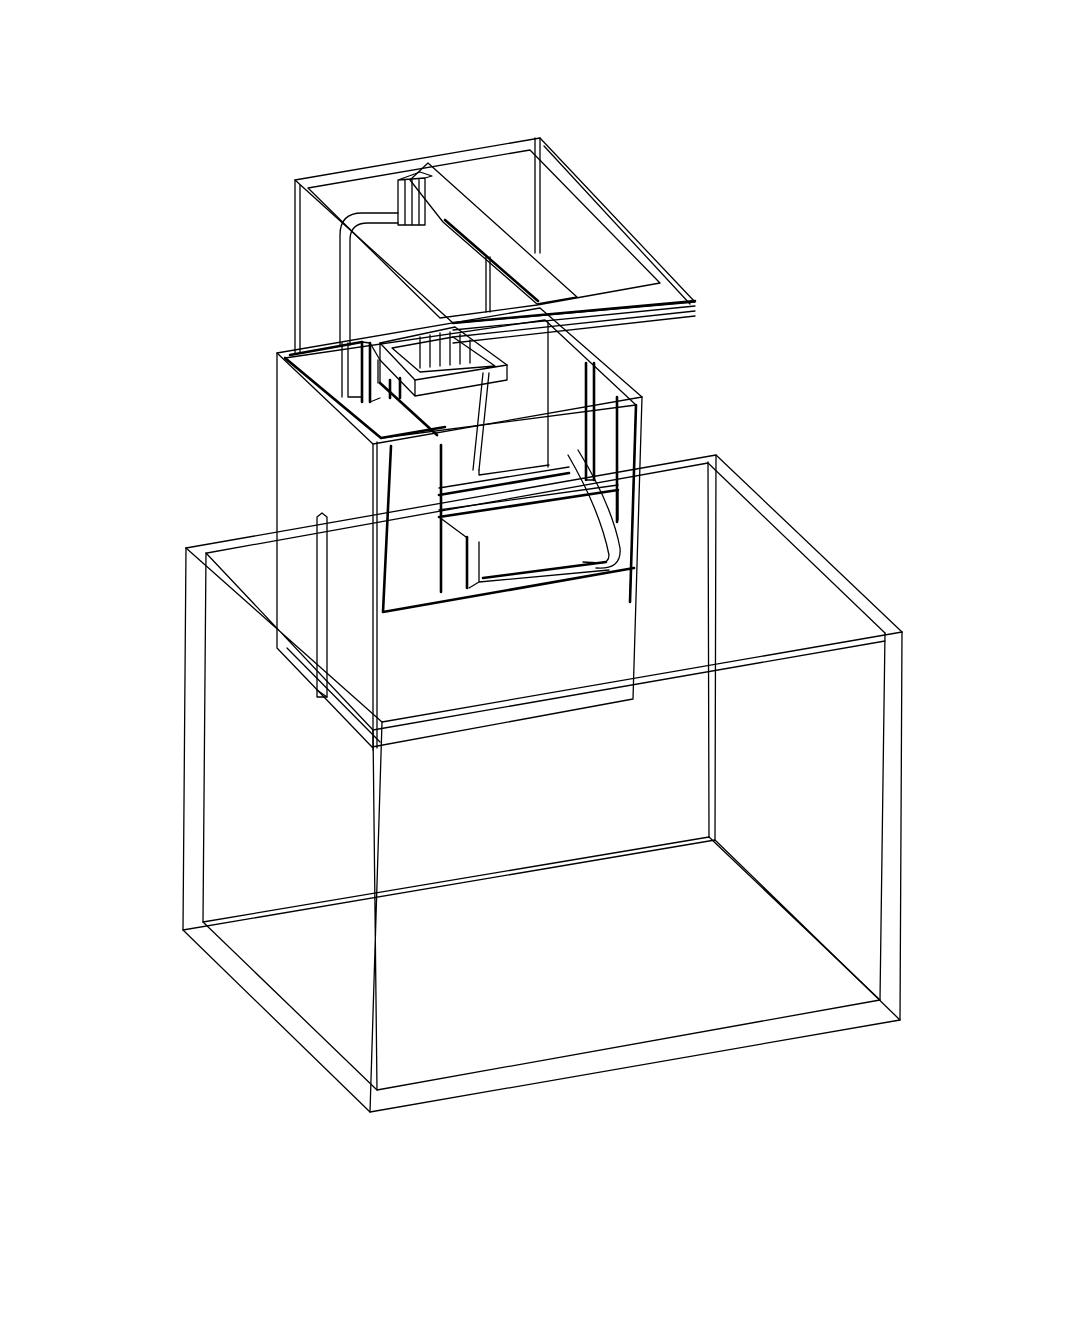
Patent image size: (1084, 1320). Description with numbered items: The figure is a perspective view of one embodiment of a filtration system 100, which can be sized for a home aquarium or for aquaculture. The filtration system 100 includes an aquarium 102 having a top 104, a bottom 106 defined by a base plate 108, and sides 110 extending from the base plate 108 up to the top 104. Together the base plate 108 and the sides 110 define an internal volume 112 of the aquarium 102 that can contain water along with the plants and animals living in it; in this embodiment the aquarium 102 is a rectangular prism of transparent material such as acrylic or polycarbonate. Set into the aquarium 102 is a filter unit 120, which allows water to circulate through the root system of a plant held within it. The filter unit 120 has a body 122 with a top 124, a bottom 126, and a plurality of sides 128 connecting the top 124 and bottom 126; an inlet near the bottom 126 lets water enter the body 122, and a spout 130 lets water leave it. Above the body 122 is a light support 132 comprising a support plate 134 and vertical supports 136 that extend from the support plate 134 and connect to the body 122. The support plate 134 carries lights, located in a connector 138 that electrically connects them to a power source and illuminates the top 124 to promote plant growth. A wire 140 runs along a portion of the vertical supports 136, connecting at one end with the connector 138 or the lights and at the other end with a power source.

The filtration system 100 is at (763, 103).
The aquarium 102 is at (763, 419).
The top 104 is at (787, 527).
The bottom 106 is at (455, 1110).
The base plate 108 is at (655, 1027).
The sides 110 is at (185, 727).
The internal volume 112 is at (811, 606).
The filter unit 120 is at (224, 216).
The body 122 is at (300, 455).
The top 124 is at (290, 352).
The bottom 126 is at (345, 735).
The sides 128 is at (300, 448).
The spout 130 is at (574, 554).
The light support 132 is at (450, 192).
The support plate 134 is at (622, 218).
The vertical supports 136 is at (296, 278).
The connector 138 is at (442, 178).
The wire 140 is at (318, 713).